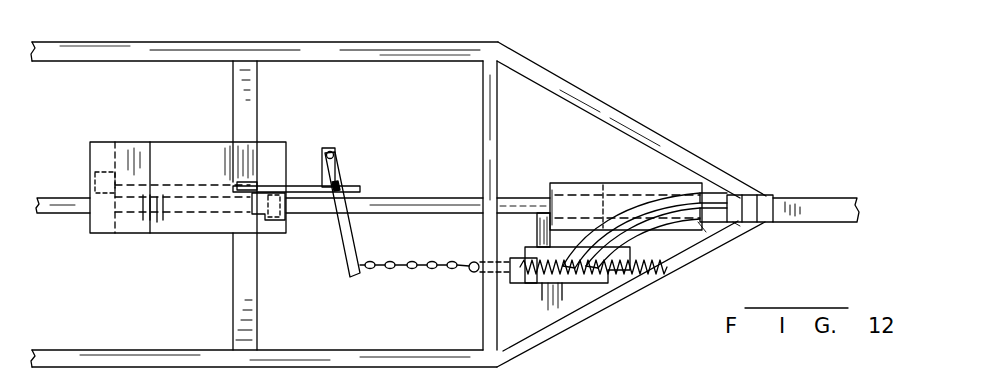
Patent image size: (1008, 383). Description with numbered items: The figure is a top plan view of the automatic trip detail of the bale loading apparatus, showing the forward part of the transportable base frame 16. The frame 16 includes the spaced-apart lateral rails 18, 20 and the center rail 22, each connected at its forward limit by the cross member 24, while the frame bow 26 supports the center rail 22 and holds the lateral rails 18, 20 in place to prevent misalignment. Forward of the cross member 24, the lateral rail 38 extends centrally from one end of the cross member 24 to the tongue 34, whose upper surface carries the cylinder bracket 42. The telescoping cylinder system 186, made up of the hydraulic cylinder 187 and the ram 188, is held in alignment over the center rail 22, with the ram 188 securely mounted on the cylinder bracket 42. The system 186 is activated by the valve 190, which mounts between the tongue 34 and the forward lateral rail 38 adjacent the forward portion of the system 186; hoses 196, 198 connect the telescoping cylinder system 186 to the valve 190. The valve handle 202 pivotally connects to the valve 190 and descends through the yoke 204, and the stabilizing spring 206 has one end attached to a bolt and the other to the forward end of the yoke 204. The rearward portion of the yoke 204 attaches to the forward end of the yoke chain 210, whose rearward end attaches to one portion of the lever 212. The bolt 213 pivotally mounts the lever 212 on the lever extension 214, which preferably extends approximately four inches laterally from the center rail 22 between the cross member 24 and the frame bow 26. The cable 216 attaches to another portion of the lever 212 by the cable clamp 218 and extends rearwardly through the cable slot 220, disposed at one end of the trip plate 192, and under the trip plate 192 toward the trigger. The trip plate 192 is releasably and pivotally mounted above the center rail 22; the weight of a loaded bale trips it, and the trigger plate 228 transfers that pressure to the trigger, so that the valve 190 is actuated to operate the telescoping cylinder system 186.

The base frame 16 is at (90, 36).
The lateral rail 18 is at (98, 350).
The lateral rail 20 is at (157, 47).
The center rail 22 is at (67, 208).
The cross member 24 is at (483, 88).
The frame bow 26 is at (248, 67).
The tongue 34 is at (830, 203).
The lateral rail 38 is at (692, 253).
The cylinder bracket 42 is at (757, 191).
The telescoping cylinder system 186 is at (604, 183).
The hydraulic cylinder 187 is at (562, 183).
The ram 188 is at (735, 225).
The valve 190 is at (585, 285).
The trip plate 192 is at (148, 148).
The hose 196 is at (677, 190).
The hose 198 is at (700, 240).
The valve handle 202 is at (537, 287).
The yoke 204 is at (502, 284).
The stabilizing spring 206 is at (622, 274).
The yoke chain 210 is at (433, 271).
The lever 212 is at (343, 238).
The bolt 213 is at (336, 155).
The lever extension 214 is at (322, 150).
The cable 216 is at (302, 182).
The cable clamp 218 is at (347, 177).
The cable slot 220 is at (257, 148).
The trigger plate 228 is at (88, 182).